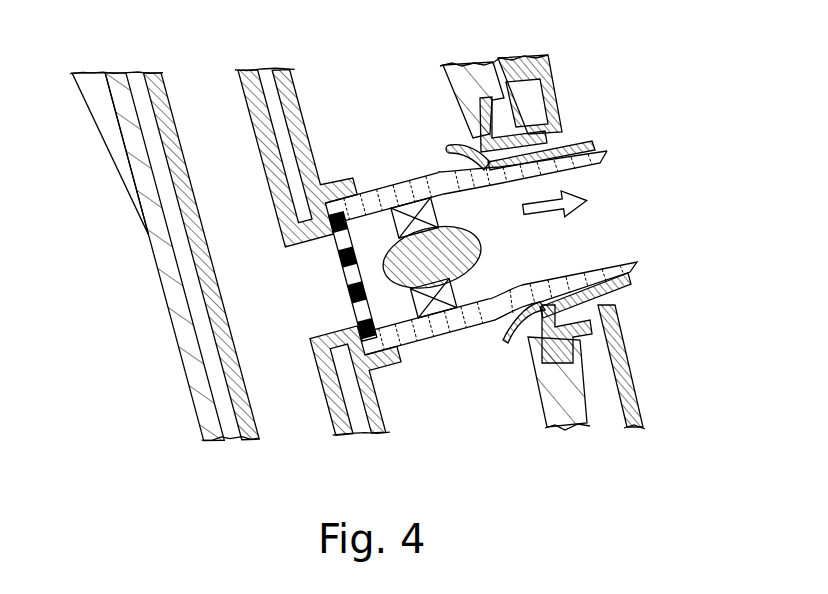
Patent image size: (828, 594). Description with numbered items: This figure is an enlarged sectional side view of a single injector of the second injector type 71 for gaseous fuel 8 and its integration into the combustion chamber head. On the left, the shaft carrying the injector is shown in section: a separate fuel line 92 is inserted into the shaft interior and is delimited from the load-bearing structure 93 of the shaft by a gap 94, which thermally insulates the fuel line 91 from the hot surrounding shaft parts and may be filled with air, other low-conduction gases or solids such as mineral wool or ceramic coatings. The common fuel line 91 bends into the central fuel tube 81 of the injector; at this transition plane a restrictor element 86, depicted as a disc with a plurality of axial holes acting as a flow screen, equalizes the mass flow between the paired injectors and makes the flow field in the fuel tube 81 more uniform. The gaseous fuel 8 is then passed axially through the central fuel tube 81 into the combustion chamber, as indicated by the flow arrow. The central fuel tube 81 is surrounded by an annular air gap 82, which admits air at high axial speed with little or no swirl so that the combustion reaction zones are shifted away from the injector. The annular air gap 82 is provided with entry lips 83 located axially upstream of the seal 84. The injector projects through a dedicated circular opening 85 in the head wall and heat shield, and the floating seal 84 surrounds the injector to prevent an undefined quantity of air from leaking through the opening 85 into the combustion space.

The gaseous fuel 8 is at (586, 215).
The second injector type 71 is at (663, 207).
The central fuel tube 81 is at (580, 172).
The annular air gap 82 is at (608, 142).
The entry lips 83 is at (436, 145).
The seal 84 is at (576, 314).
The circular opening 85 is at (622, 292).
The restrictor element 86 is at (325, 283).
The fuel line 91 is at (172, 270).
The fuel line 92 is at (240, 446).
The load-bearing structure 93 is at (183, 405).
The gap 94 is at (183, 290).